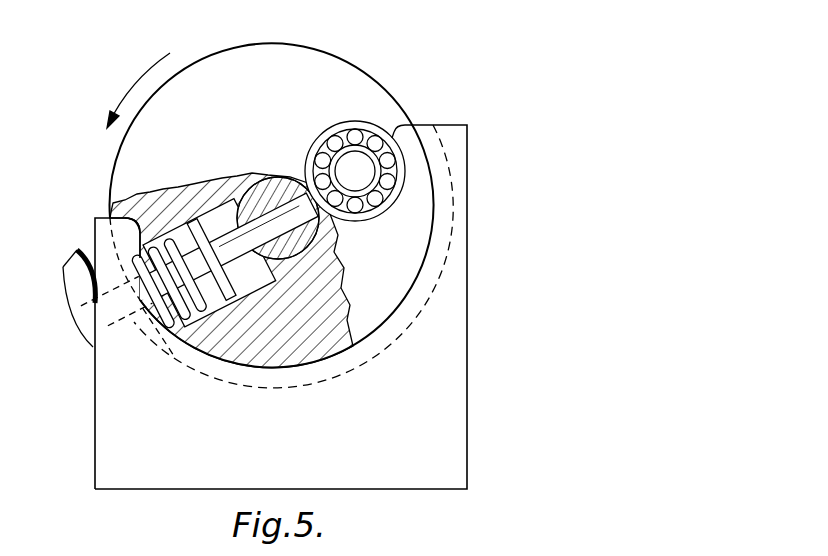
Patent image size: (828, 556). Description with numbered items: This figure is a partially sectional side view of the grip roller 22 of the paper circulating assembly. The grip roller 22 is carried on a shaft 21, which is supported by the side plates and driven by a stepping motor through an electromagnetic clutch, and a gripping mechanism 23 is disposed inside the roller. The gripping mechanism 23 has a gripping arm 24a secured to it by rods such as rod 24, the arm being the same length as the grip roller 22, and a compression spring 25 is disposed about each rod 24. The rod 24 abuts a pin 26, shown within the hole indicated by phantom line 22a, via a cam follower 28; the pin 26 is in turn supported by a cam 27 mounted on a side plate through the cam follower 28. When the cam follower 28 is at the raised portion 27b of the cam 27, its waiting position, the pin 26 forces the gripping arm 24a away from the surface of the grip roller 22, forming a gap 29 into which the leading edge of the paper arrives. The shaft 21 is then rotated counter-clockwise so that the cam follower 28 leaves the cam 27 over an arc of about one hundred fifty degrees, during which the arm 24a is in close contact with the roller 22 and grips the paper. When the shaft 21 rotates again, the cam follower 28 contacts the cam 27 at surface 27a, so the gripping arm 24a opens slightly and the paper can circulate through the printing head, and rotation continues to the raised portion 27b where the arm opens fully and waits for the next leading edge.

The shaft 21 is at (271, 180).
The grip roller 22 is at (376, 78).
The phantom line 22a is at (396, 128).
The gripping mechanism 23 is at (206, 186).
The rod 24 is at (258, 272).
The gripping arm 24a is at (76, 320).
The compression spring 25 is at (208, 302).
The pin 26 is at (364, 181).
The cam 27 is at (468, 378).
The surface 27a is at (373, 333).
The raised portion 27b is at (404, 155).
The cam follower 28 is at (401, 195).
The gap 29 is at (88, 240).